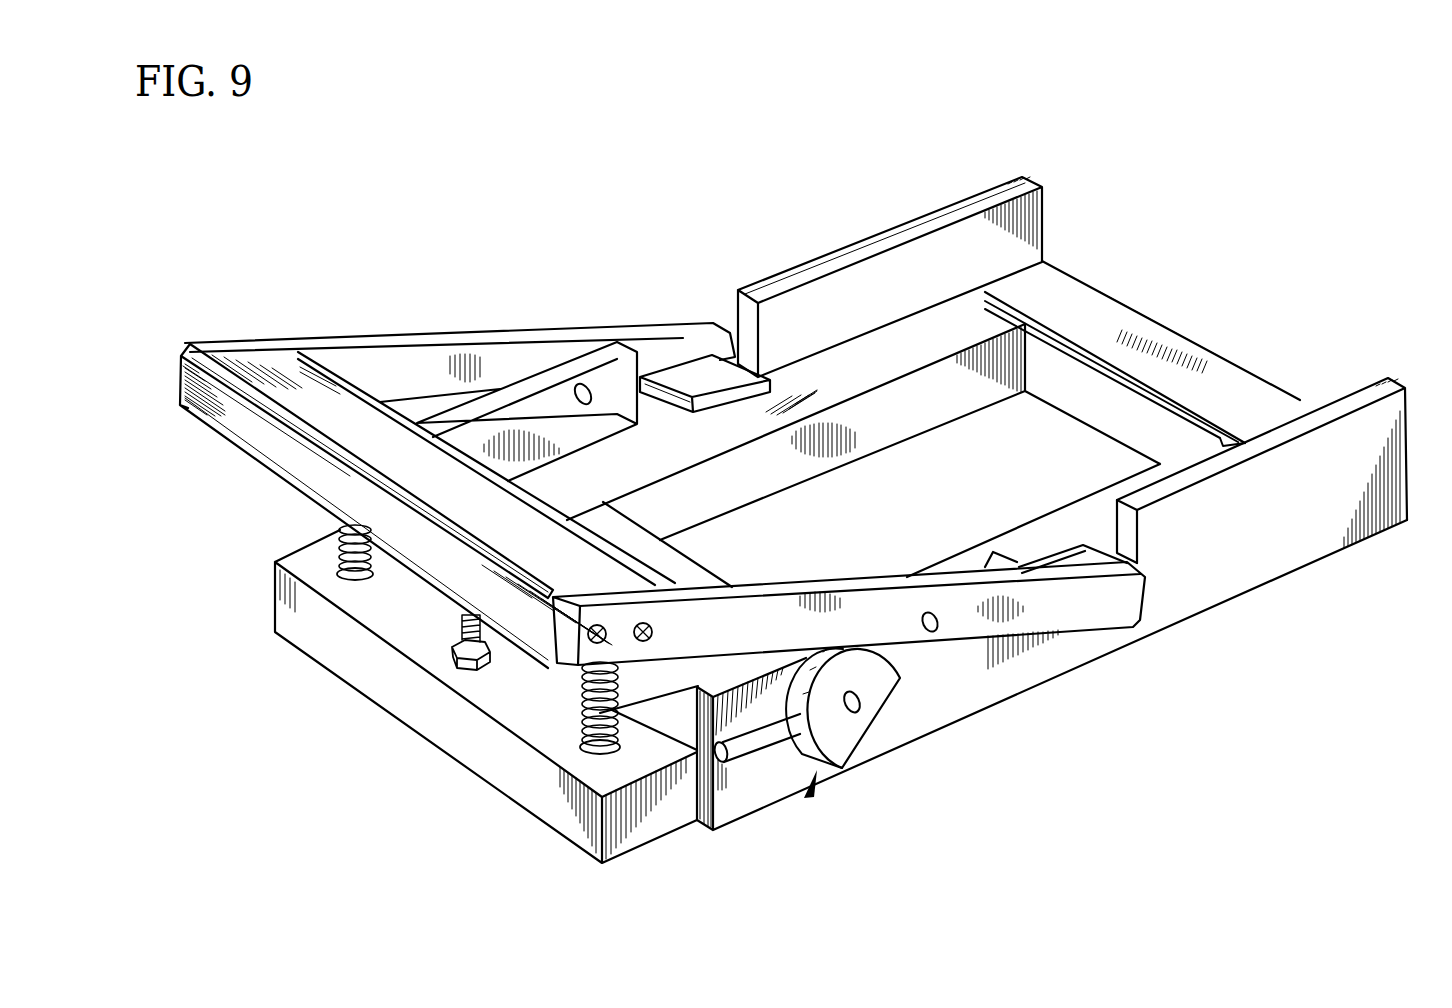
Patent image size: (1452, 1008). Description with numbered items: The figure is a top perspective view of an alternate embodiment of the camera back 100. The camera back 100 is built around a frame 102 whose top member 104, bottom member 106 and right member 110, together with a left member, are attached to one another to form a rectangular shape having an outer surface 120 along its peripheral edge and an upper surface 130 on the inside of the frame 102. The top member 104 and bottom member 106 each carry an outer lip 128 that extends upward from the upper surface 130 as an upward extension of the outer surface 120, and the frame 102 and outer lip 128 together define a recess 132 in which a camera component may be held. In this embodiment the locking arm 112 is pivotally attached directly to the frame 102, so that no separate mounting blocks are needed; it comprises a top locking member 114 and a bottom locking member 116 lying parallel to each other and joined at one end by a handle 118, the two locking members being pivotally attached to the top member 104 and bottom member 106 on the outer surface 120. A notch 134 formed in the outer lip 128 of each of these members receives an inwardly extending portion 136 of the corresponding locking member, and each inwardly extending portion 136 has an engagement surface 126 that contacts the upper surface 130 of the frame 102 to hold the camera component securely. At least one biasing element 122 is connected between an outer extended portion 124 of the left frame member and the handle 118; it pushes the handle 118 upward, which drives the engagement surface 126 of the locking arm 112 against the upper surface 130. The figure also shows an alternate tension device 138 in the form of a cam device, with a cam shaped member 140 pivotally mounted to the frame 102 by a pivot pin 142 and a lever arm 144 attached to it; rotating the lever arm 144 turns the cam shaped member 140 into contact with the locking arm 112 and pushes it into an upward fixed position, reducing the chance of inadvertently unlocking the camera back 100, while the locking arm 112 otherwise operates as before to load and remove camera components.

The camera back 100 is at (999, 123).
The frame 102 is at (1182, 335).
The top member 104 is at (897, 223).
The bottom member 106 is at (1067, 653).
The right member 110 is at (1233, 398).
The locking arm 112 is at (418, 333).
The top locking member 114 is at (542, 333).
The bottom locking member 116 is at (996, 636).
The handle 118 is at (255, 358).
The outer surface 120 is at (1297, 492).
The biasing element 122 is at (580, 713).
The outer extended portion 124 is at (523, 810).
The engagement surface 126 is at (717, 408).
The outer lip 128 is at (787, 272).
The upper surface 130 is at (608, 477).
The recess 132 is at (1108, 310).
The notch 134 is at (1127, 534).
The inwardly extending portion 136 is at (678, 382).
The tension device 138 is at (808, 798).
The cam shaped member 140 is at (845, 770).
The pivot pin 142 is at (859, 706).
The lever arm 144 is at (762, 762).